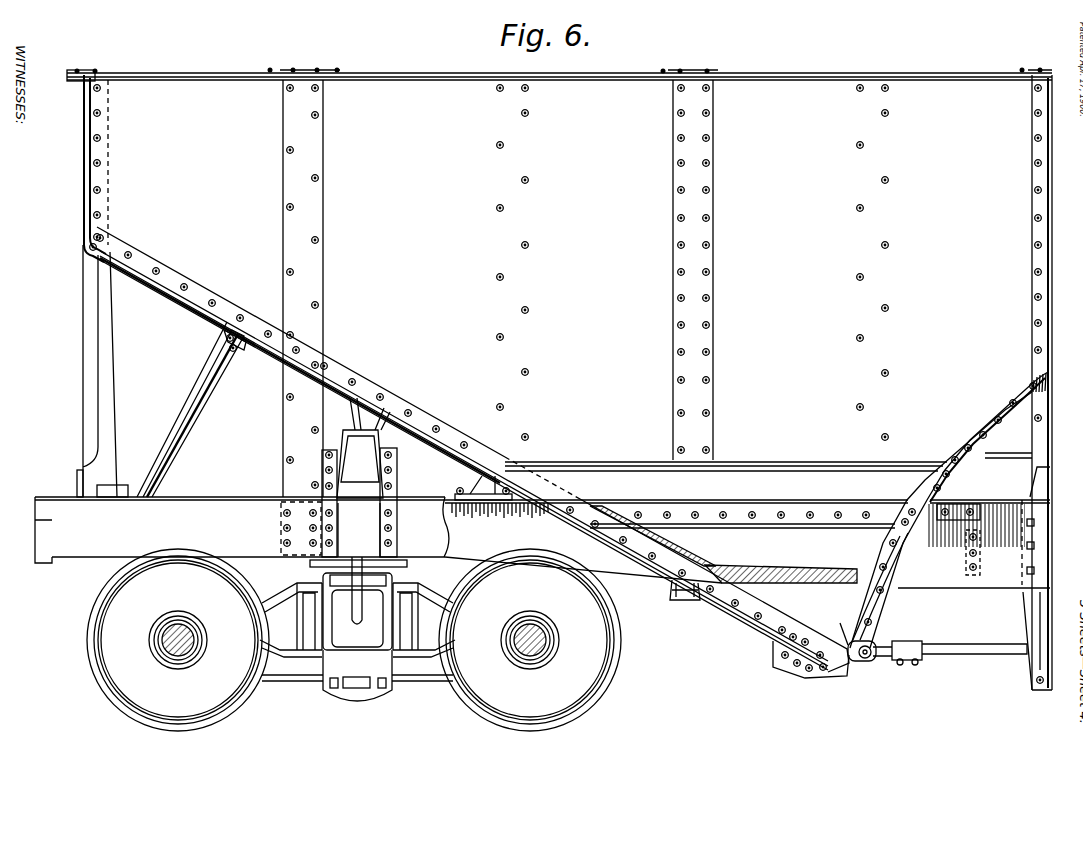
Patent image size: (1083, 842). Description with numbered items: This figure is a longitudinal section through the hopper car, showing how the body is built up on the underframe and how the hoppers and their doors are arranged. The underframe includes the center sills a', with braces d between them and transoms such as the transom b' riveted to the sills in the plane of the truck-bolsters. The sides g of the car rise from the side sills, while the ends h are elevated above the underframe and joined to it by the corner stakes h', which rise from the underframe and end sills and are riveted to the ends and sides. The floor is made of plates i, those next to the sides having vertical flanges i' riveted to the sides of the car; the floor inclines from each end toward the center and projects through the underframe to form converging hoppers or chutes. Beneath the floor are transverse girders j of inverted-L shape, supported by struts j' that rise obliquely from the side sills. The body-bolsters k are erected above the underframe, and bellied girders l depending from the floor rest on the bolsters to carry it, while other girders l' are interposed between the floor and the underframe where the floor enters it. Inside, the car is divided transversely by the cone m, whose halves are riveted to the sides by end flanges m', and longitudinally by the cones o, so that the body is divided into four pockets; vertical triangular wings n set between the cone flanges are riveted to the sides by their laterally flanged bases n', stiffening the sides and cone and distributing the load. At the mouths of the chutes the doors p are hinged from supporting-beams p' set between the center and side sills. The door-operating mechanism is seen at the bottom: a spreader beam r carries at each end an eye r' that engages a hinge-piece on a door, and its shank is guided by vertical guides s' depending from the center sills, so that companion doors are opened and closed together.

The side g is at (559, 283).
The end h is at (75, 160).
The corner stake h' is at (78, 371).
The floor plate i is at (473, 449).
The vertical flange i' is at (300, 368).
The transverse girder j is at (235, 360).
The strut j' is at (170, 409).
The center sill a' is at (542, 540).
The transom b' is at (344, 536).
The body-bolster k is at (364, 460).
The bellied girder l is at (359, 414).
The girder l' is at (475, 483).
The longitudinal cone o is at (765, 463).
The vertical triangular wing n is at (1053, 382).
The lateral flange n' is at (1015, 383).
The transverse cone m is at (949, 510).
The end flange m' is at (987, 431).
The brace d is at (981, 542).
The door p is at (891, 575).
The supporting-beam p' is at (957, 553).
The vertical guide s' is at (974, 639).
The beam r is at (897, 668).
The eye r' is at (868, 669).